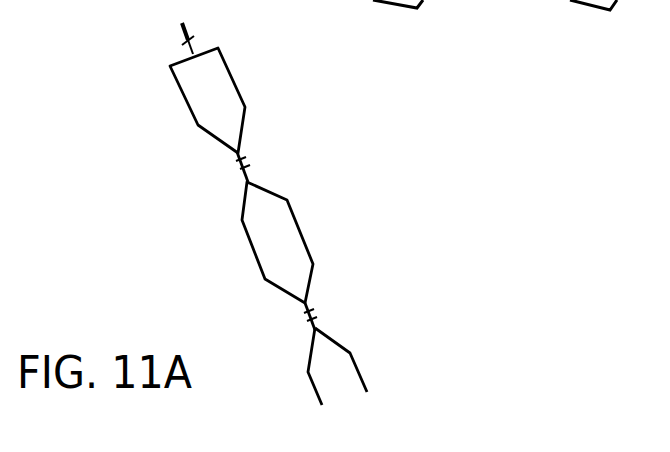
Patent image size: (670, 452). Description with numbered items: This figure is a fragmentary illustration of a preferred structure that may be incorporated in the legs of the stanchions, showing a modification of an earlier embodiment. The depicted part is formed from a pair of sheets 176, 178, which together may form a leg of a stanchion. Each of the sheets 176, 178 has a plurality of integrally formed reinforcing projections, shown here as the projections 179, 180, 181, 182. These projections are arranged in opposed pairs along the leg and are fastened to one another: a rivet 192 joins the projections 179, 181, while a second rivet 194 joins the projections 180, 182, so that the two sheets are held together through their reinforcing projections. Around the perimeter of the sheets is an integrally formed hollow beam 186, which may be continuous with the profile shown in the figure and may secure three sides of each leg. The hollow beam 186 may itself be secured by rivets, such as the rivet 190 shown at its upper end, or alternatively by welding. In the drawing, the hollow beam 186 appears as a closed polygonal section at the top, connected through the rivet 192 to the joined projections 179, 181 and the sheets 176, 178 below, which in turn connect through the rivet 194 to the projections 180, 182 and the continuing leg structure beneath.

The sheet 176 is at (315, 240).
The sheet 178 is at (253, 261).
The reinforcing projection 179 is at (244, 150).
The reinforcing projection 180 is at (310, 305).
The reinforcing projection 181 is at (246, 178).
The reinforcing projection 182 is at (310, 332).
The hollow beam 186 is at (242, 70).
The rivet 190 is at (196, 38).
The rivet 192 is at (247, 163).
The rivet 194 is at (315, 315).